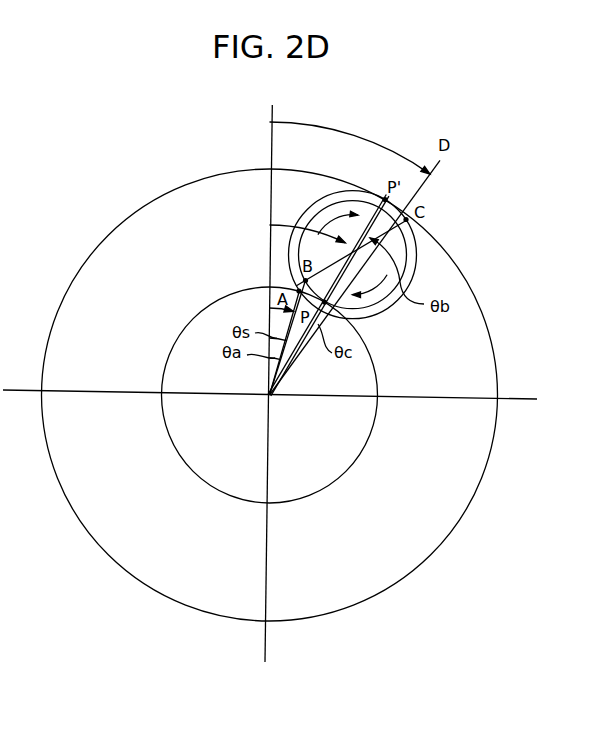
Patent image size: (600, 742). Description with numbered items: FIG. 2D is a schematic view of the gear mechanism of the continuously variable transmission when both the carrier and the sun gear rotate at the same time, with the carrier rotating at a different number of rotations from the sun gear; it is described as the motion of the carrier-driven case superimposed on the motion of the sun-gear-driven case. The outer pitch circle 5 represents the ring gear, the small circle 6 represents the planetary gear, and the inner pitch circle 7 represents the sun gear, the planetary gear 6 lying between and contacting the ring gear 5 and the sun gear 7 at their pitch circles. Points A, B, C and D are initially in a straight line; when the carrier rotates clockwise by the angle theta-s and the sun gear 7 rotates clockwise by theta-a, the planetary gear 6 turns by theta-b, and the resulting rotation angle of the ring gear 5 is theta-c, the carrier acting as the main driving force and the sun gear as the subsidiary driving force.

The outer ring / scanning circle 5 is at (155, 198).
The rotating scanning disk 6 is at (331, 196).
The inner circle / central member 7 is at (177, 339).